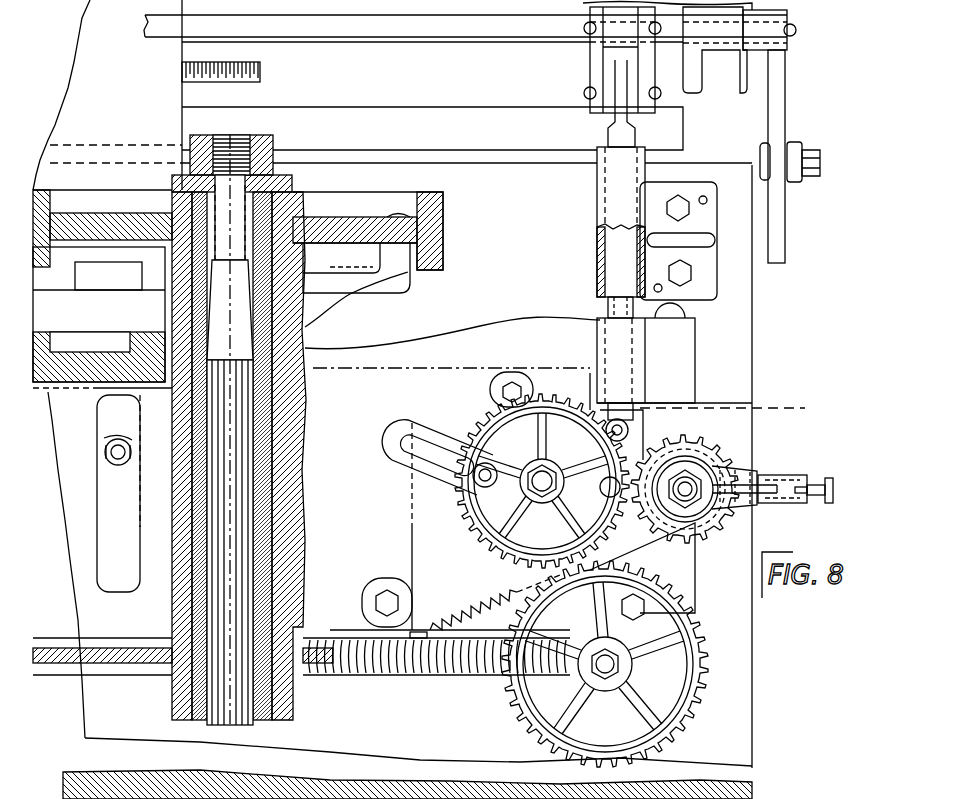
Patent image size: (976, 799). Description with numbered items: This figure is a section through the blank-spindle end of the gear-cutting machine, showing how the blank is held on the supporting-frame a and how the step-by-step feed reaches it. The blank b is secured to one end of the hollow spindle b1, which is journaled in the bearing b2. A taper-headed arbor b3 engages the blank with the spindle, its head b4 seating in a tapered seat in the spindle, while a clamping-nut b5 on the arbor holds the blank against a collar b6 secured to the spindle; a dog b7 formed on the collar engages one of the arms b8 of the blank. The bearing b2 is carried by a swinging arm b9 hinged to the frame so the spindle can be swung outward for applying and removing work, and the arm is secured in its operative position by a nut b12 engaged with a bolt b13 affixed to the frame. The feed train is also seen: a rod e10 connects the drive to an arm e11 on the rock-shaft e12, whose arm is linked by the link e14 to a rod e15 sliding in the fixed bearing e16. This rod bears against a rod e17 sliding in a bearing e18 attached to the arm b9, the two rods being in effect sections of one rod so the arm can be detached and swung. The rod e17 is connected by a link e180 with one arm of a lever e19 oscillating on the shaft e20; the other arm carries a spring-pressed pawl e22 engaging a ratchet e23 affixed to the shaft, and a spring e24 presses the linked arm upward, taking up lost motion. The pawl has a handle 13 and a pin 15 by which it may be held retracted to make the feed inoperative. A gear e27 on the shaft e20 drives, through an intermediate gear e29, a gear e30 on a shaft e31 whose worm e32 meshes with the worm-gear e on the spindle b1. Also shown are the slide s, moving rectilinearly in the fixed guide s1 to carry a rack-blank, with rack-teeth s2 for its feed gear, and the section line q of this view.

The supporting-frame a is at (743, 343).
The center line q is at (730, 408).
The worm-gear e is at (353, 670).
The rod e10 is at (797, 173).
The arm e11 is at (773, 107).
The rock-shaft e12 is at (521, 32).
The link e14 is at (640, 62).
The rod e15 is at (613, 130).
The fixed bearing e16 is at (595, 205).
The rod e17 is at (607, 310).
The bearing e18 is at (597, 345).
The link e180 is at (589, 480).
The lever e19 is at (757, 470).
The shaft e20 is at (688, 492).
The spring-pressed pawl e22 is at (762, 474).
The ratchet e23 is at (707, 457).
The spring e24 is at (495, 602).
The gear e27 is at (700, 543).
The intermediate gear e29 is at (470, 528).
The gear e30 is at (705, 685).
The shaft e31 is at (640, 657).
The worm e32 is at (623, 700).
The handle 13 is at (817, 480).
The pin 15 is at (805, 494).
The blank b is at (430, 215).
The spindle b1 is at (273, 442).
The bearing b2 is at (172, 610).
The taper-headed arbor b3 is at (233, 135).
The head b4 is at (230, 430).
The clamping-nut b5 is at (273, 155).
The collar b6 is at (356, 304).
The dog b7 is at (408, 280).
The arm b8 is at (360, 220).
The swinging arm b9 is at (468, 343).
The nut b12 is at (113, 435).
The bolt b13 is at (110, 452).
The slide s is at (73, 300).
The fixed guide s1 is at (50, 400).
The rack-teeth s2 is at (158, 280).